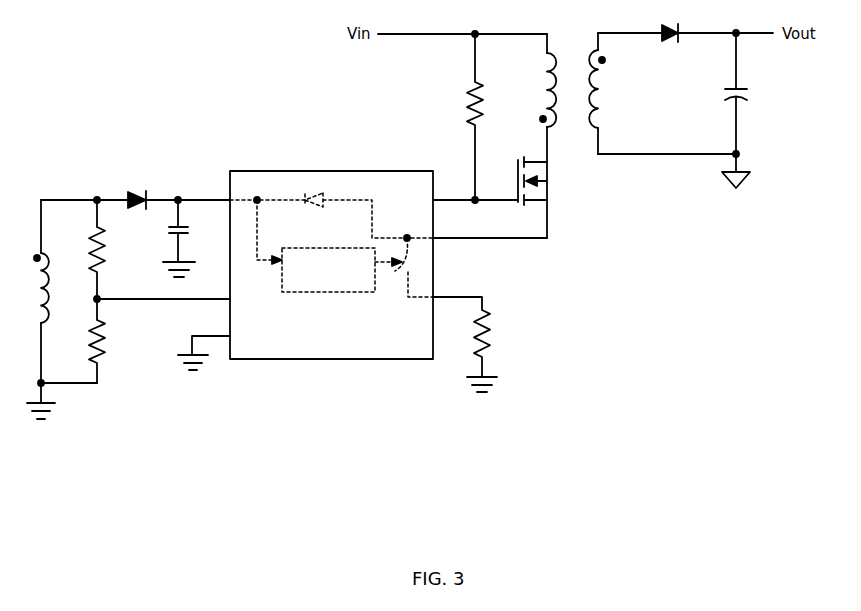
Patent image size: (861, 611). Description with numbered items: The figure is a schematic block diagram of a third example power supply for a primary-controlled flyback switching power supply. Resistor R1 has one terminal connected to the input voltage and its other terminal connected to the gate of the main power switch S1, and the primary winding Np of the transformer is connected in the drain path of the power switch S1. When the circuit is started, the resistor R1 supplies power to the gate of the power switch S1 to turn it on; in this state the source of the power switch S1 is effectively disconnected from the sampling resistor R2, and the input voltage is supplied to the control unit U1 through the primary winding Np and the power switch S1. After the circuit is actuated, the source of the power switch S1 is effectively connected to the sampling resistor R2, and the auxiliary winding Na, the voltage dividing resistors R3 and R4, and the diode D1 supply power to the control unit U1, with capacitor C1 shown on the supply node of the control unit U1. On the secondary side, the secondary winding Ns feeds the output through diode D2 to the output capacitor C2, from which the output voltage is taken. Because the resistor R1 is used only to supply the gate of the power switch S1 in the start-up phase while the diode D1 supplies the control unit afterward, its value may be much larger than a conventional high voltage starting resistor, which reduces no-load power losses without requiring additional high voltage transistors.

The auxiliary winding Na is at (28, 291).
The diode D1 is at (137, 186).
The VCC capacitor C1 is at (189, 238).
The voltage dividing resistor R3 is at (110, 249).
The voltage dividing resistor R4 is at (110, 341).
The control unit U1 is at (353, 171).
The resistor R1 is at (461, 117).
The primary winding Np is at (536, 98).
The main power switch S1 is at (547, 197).
The secondary winding Ns is at (606, 93).
The output rectifier diode D2 is at (668, 46).
The output capacitor C2 is at (747, 93).
The sampling resistor R2 is at (475, 344).